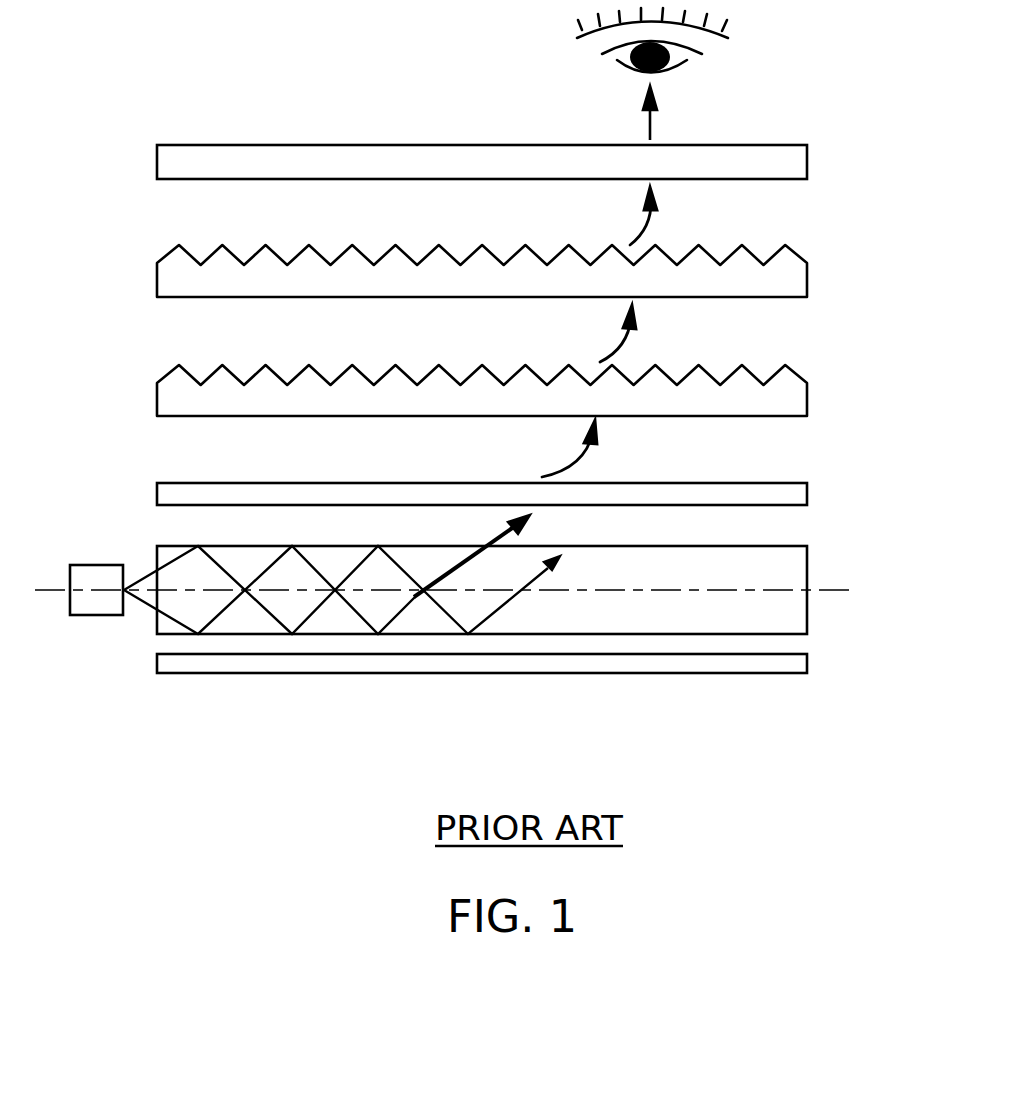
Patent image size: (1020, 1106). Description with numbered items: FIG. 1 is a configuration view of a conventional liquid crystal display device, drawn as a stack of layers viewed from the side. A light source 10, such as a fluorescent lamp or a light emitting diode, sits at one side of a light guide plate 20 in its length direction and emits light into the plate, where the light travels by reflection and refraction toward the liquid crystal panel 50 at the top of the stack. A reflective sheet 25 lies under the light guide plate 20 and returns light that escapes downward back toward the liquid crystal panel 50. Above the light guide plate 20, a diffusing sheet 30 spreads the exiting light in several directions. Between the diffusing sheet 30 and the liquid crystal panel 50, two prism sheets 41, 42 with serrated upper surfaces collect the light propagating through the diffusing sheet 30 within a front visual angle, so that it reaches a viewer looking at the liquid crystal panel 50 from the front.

The light source 10 is at (90, 566).
The light guide plate 20 is at (807, 562).
The reflective sheet 25 is at (807, 660).
The diffusing sheet 30 is at (807, 490).
The prism sheet 41 is at (807, 396).
The prism sheet 42 is at (807, 276).
The liquid crystal panel 50 is at (807, 160).